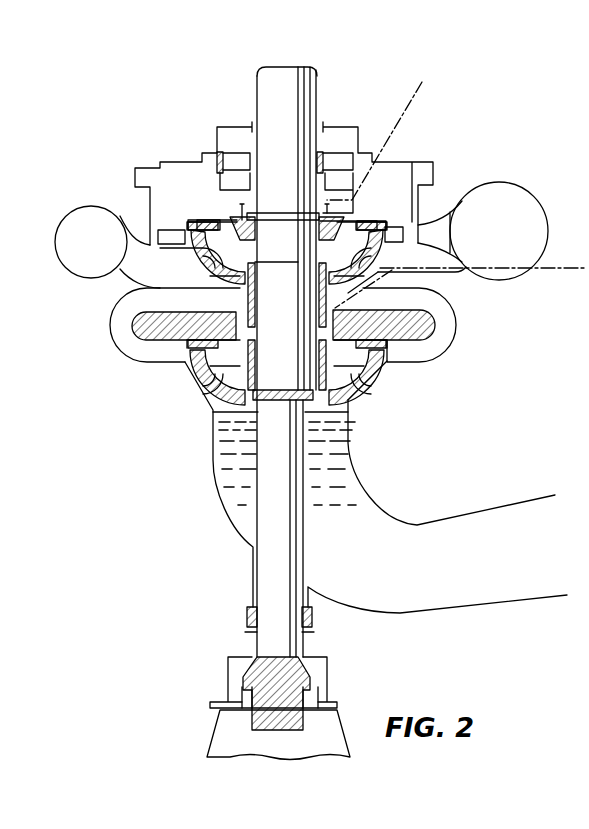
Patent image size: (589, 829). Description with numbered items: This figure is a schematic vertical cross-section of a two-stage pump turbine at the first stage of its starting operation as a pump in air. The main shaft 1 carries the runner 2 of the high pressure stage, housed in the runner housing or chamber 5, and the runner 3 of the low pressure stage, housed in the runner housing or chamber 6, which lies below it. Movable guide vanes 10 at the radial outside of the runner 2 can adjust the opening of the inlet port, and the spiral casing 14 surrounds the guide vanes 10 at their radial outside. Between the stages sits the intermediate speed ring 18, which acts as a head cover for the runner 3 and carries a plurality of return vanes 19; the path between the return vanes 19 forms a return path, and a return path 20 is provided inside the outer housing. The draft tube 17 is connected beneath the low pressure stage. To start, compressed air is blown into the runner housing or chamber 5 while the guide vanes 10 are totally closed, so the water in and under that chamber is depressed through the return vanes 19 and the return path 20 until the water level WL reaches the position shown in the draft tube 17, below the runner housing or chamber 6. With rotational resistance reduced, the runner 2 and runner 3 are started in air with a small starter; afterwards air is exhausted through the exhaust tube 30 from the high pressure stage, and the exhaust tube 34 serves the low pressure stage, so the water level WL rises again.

The main shaft 1 is at (316, 97).
The exhaust tube 30 is at (410, 104).
The movable guide vanes 10 is at (391, 227).
The spiral casing 14 is at (537, 200).
The exhaust tube 34 is at (551, 266).
The runner of high pressure stage 2 is at (222, 258).
The runner housing or chamber of high pressure stage 5 is at (352, 265).
The return vanes 19 is at (433, 300).
The intermediate speed ring 18 is at (433, 342).
The return path 20 is at (420, 353).
The runner of low pressure stage 3 is at (203, 382).
The runner housing or chamber of low pressure stage 6 is at (358, 380).
The water level WL is at (349, 416).
The draft tube 17 is at (365, 497).